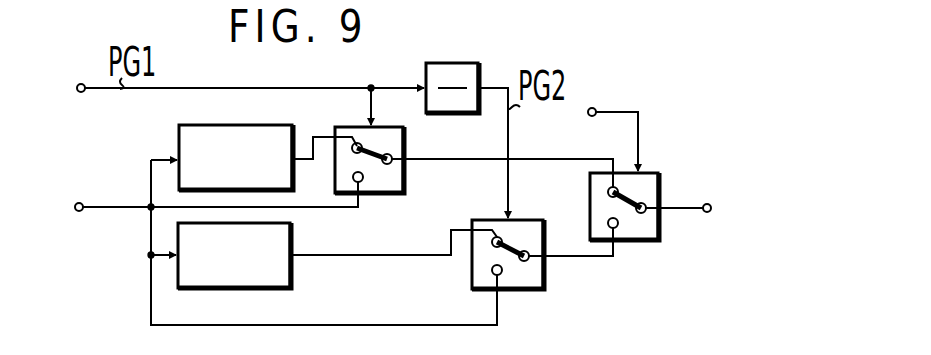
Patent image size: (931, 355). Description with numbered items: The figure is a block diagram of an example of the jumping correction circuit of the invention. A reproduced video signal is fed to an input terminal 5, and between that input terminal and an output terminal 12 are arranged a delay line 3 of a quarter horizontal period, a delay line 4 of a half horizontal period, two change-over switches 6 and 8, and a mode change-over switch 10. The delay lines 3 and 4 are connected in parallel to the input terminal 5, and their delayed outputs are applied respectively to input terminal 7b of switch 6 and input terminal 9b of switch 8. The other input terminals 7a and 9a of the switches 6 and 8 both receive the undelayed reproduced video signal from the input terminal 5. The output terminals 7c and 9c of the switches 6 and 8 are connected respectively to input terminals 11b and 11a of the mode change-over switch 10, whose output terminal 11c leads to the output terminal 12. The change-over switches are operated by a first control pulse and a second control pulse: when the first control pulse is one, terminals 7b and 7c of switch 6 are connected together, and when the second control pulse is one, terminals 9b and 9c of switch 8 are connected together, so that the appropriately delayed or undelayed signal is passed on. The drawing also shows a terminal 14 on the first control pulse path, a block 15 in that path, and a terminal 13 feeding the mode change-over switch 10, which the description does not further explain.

The delay line of 0.25Th 3 is at (292, 167).
The delay line of 0.5Th 4 is at (290, 278).
The input terminal 5 is at (71, 212).
The change-over switch 6 is at (397, 193).
The input terminal of switch 6 7a is at (358, 182).
The input terminal of switch 6 7b is at (353, 142).
The output terminal of switch 6 7c is at (392, 158).
The change-over switch 8 is at (537, 289).
The input terminal of switch 8 9a is at (492, 275).
The input terminal of switch 8 9b is at (497, 237).
The output terminal of switch 8 9c is at (529, 261).
The mode change-over switch 10 is at (656, 227).
The input terminal of mode change-over switch 10 11a is at (615, 228).
The input terminal of mode change-over switch 10 11b is at (608, 192).
The output terminal of mode change-over switch 10 11c is at (643, 203).
The output terminal 12 is at (711, 208).
The control signal terminal 13 is at (595, 108).
The pulse generator input terminal 14 is at (80, 92).
The 1/2 frequency divider 15 is at (470, 113).